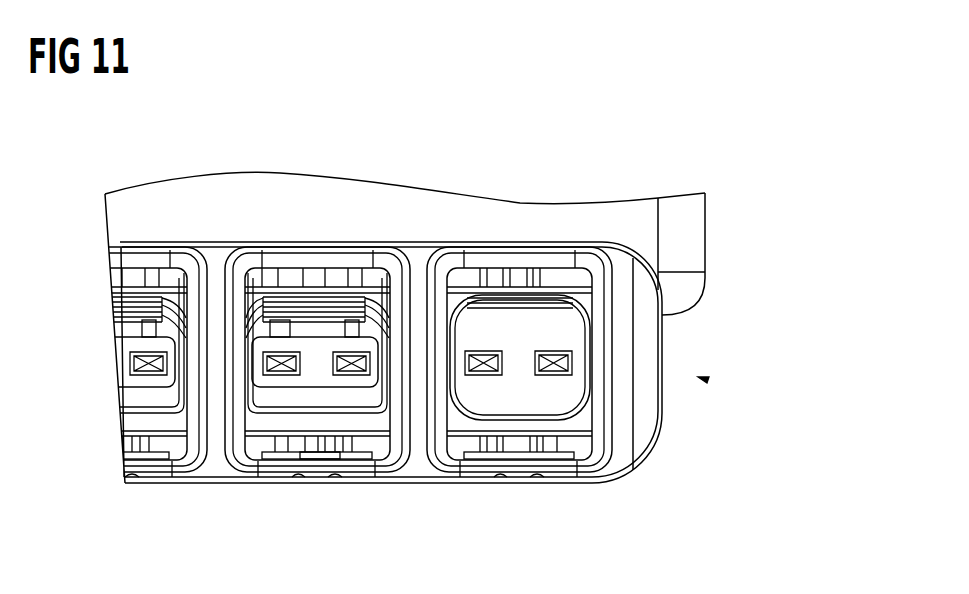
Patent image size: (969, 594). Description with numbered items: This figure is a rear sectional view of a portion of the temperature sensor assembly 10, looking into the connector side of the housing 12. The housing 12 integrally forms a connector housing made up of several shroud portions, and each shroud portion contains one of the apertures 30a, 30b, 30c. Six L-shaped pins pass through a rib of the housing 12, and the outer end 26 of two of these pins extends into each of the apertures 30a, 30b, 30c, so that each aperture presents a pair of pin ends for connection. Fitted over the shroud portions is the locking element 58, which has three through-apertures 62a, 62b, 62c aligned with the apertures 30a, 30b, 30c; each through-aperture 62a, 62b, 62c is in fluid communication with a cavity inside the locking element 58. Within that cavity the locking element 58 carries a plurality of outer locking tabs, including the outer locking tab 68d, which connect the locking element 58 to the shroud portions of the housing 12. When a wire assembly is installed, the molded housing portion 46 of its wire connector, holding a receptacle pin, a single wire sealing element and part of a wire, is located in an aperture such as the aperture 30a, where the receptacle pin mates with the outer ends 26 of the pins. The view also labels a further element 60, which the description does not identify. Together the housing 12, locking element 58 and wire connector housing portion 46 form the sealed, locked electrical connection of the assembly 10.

The temperature sensor assembly 10 is at (116, 548).
The housing 12 is at (637, 223).
The outer end 26 is at (555, 376).
The aperture 30a is at (547, 445).
The aperture 30b is at (350, 442).
The aperture 30c is at (140, 457).
The housing portion 46 is at (553, 330).
The locking element 58 is at (707, 380).
The collar 60 is at (620, 432).
The through-aperture 62a is at (584, 459).
The through-aperture 62b is at (384, 459).
The through-aperture 62c is at (179, 462).
The outer locking tab 68d is at (315, 459).